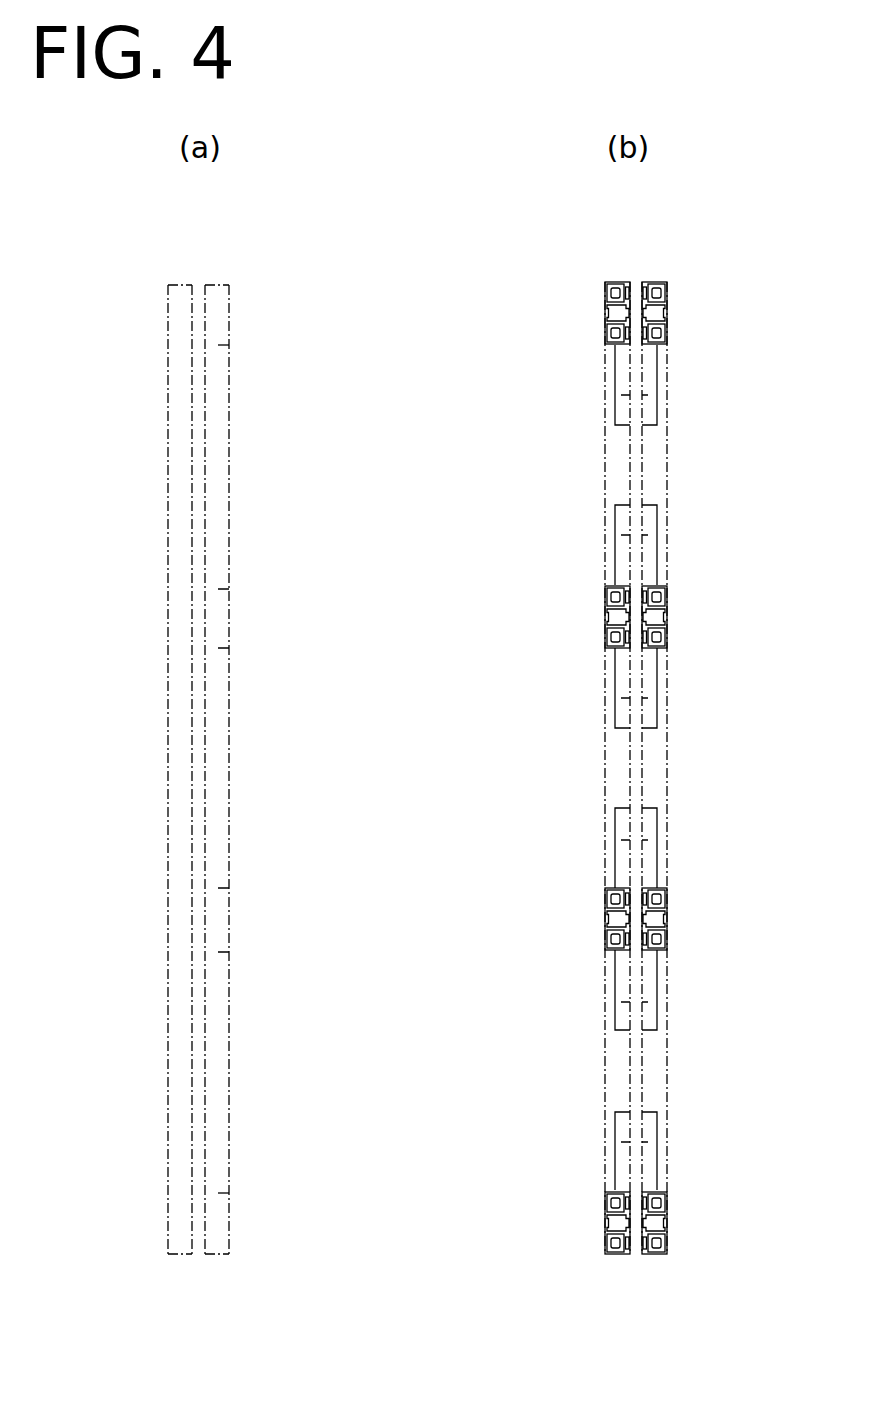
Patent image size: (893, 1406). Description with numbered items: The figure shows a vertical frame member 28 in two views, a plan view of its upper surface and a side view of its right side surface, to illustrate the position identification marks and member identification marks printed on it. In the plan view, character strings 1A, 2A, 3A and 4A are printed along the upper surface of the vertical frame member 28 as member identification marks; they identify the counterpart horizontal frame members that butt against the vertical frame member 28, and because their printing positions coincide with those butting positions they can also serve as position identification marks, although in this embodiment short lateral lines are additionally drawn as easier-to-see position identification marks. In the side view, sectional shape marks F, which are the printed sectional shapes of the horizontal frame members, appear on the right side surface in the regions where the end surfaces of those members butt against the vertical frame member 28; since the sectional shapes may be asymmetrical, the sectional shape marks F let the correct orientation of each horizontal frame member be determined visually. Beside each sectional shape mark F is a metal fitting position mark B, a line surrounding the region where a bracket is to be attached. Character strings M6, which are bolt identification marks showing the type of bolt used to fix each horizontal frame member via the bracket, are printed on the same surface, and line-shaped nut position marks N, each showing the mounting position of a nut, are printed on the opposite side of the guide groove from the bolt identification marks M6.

The vertical frame member 28 is at (168, 362).
The member identification mark 4A is at (232, 302).
The member identification mark 3A is at (232, 604).
The member identification mark 2A is at (232, 907).
The member identification mark 1A is at (232, 1209).
The sectional shape mark F is at (668, 292).
The metal fitting position mark B is at (658, 365).
The bolt identification mark M6 is at (669, 398).
The nut position mark N is at (612, 394).